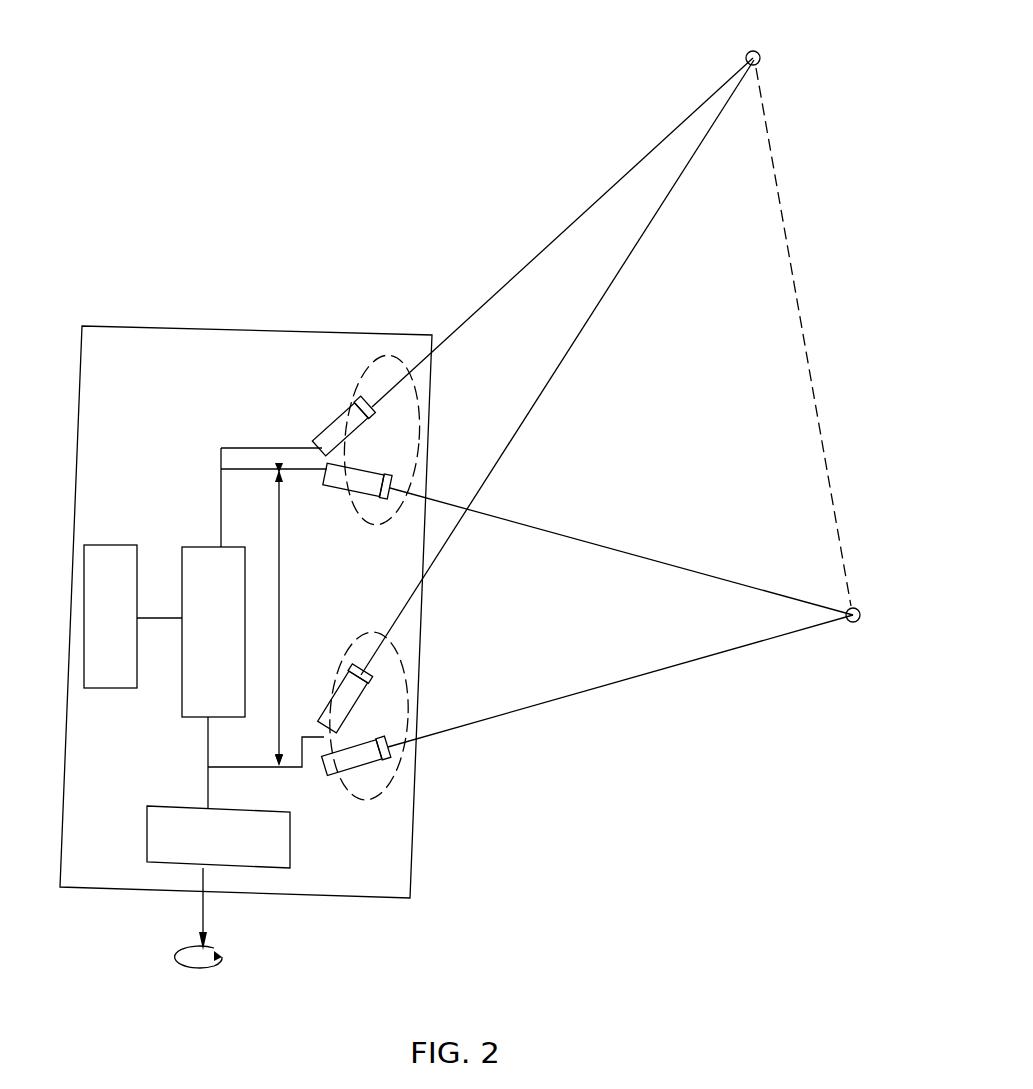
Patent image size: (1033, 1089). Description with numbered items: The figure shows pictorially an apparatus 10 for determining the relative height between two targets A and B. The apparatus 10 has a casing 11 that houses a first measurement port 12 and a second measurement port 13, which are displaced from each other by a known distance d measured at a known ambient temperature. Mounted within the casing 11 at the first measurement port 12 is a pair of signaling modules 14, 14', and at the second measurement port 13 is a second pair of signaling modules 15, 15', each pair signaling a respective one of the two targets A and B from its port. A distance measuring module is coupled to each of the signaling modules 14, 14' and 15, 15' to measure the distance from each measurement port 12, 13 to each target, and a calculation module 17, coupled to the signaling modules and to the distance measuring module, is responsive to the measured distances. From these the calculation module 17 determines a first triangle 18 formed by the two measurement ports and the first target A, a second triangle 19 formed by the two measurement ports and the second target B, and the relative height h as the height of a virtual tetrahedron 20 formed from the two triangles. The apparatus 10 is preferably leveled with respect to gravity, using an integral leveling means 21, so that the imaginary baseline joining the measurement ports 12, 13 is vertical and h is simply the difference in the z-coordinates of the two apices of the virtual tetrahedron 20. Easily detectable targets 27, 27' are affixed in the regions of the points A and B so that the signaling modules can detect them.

The apparatus 10 is at (421, 650).
The casing 11 is at (367, 898).
The first measurement port 12 is at (401, 459).
The second measurement port 13 is at (405, 733).
The signaling module 14 is at (393, 413).
The signaling module 14' is at (406, 465).
The signaling module 15 is at (399, 683).
The signaling module 15' is at (406, 736).
The calculation module 17 is at (211, 547).
The first triangle 18 is at (538, 253).
The second triangle 19 is at (592, 693).
The virtual tetrahedron 20 is at (782, 324).
The leveling means 21 is at (290, 838).
The easily detectable target 27 is at (794, 42).
The easily detectable target 27' is at (810, 605).